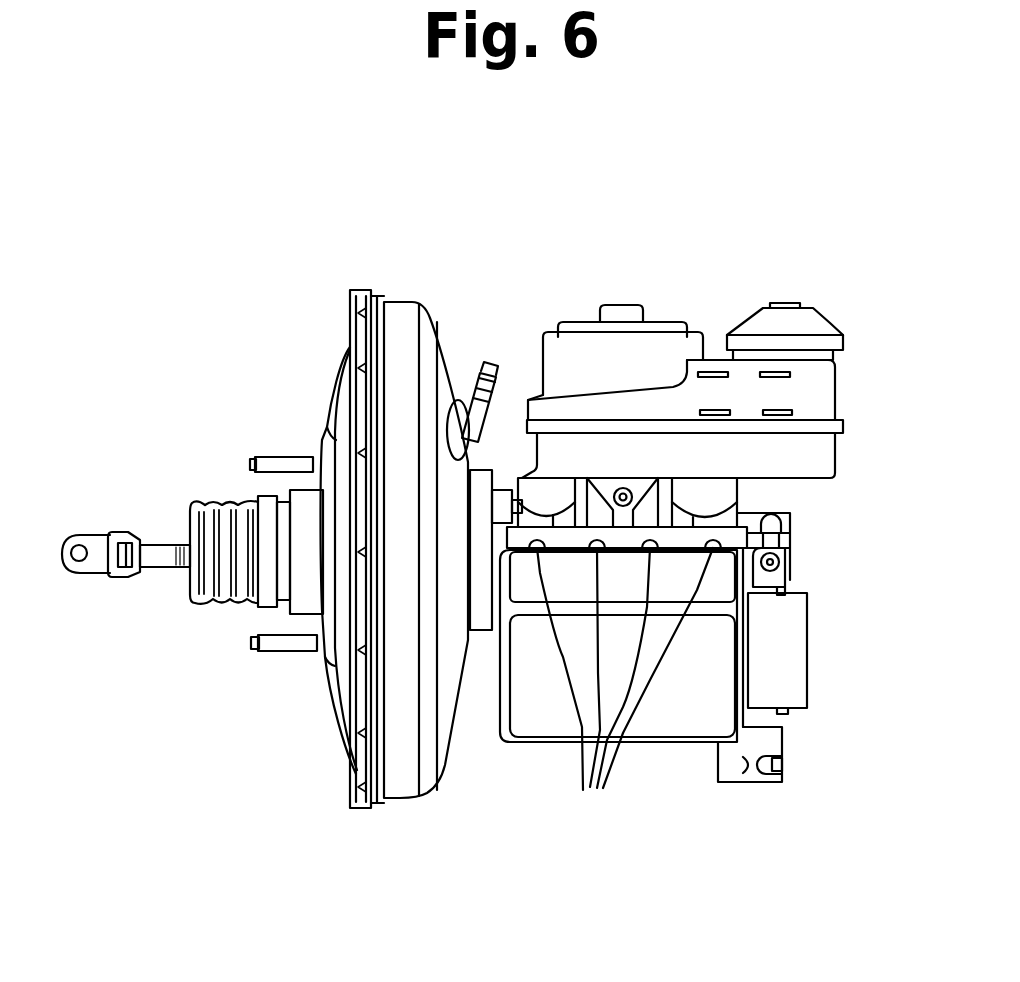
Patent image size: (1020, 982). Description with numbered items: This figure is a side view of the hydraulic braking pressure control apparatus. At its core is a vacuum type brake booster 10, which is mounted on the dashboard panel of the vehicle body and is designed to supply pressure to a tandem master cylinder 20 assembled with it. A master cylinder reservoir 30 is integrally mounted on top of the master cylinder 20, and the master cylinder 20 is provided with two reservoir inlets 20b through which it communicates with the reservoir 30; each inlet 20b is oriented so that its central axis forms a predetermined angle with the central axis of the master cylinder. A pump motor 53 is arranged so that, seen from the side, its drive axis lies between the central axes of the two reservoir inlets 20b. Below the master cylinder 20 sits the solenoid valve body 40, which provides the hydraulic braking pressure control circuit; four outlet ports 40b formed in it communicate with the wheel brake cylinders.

The brake booster 10 is at (329, 345).
The master cylinder 20 is at (809, 549).
The reservoir inlets 20b is at (540, 522).
The master cylinder reservoir 30 is at (717, 390).
The pump motor 53 is at (580, 353).
The solenoid valve body 40 is at (666, 690).
The outlet ports 40b is at (625, 701).